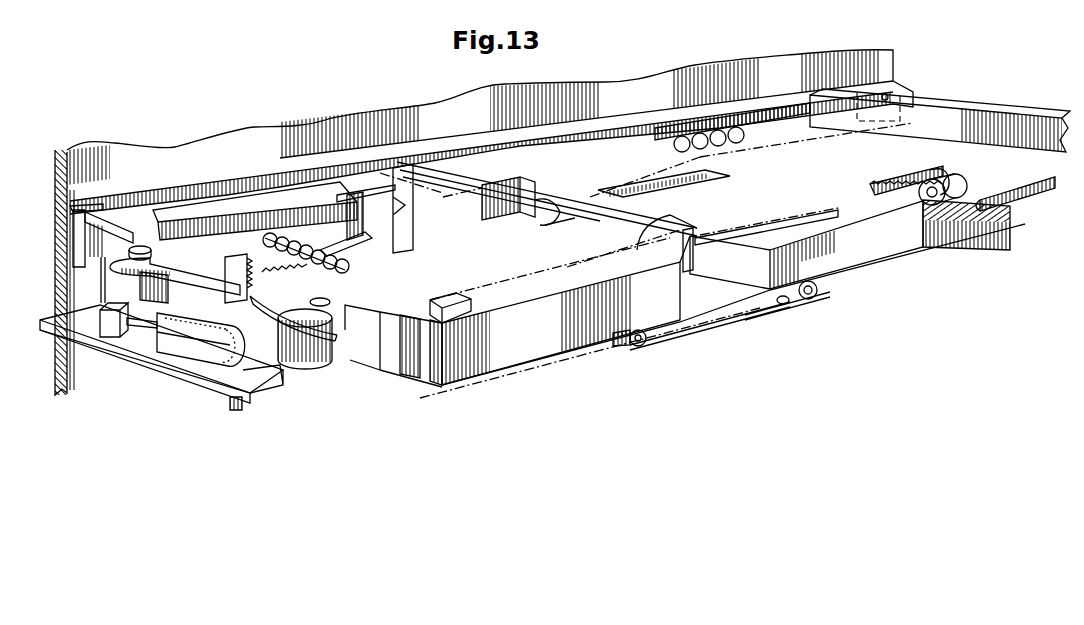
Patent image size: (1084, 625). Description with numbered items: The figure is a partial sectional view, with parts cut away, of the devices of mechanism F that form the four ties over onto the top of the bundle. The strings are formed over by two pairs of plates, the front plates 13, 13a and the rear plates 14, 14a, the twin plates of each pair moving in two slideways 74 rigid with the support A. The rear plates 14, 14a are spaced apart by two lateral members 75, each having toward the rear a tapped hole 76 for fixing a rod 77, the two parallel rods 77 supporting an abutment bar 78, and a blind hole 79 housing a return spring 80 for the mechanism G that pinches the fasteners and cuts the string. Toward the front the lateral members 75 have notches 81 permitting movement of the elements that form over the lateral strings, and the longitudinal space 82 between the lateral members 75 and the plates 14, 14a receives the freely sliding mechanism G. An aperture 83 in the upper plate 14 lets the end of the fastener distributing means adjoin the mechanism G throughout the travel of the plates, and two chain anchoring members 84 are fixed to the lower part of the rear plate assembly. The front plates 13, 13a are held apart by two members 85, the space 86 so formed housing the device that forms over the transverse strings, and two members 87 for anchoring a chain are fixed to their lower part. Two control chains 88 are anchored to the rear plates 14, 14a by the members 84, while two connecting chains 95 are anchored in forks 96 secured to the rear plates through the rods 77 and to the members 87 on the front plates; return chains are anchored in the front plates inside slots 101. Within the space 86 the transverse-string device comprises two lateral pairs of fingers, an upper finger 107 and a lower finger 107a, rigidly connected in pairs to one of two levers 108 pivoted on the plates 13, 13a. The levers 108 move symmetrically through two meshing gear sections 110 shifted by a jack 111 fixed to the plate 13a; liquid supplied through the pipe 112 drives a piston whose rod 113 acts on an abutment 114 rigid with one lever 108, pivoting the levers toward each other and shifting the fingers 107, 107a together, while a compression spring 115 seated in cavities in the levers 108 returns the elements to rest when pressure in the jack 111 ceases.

The support A is at (222, 136).
The front plate 13 is at (530, 236).
The front plate 13a is at (407, 377).
The rear plate 14 is at (756, 206).
The rear plate 14a is at (977, 240).
The slideway 74 is at (213, 185).
The lateral member 75 is at (417, 187).
The tapped hole 76 is at (967, 203).
The rod 77 is at (697, 130).
The abutment bar 78 is at (977, 120).
The blind hole 79 is at (947, 172).
The return spring 80 is at (903, 176).
The notch 81 is at (443, 173).
The longitudinal space 82 is at (527, 223).
The aperture 83 is at (707, 178).
The chain anchoring member 84 is at (810, 287).
The member 85 is at (76, 212).
The space 86 is at (407, 365).
The chain anchoring member 87 is at (640, 345).
The control chain 88 is at (762, 310).
The connecting chain 95 is at (700, 333).
The fork 96 is at (897, 90).
The slot 101 is at (112, 225).
The upper finger 107 is at (357, 199).
The lower finger 107a is at (350, 238).
The lever 108 is at (280, 213).
The gear section 110 is at (263, 307).
The jack 111 is at (187, 352).
The pipe 112 is at (240, 403).
The rod 113 is at (143, 328).
The abutment 114 is at (110, 338).
The compression spring 115 is at (347, 263).
The mechanism F is at (498, 382).
The mechanism G is at (563, 216).